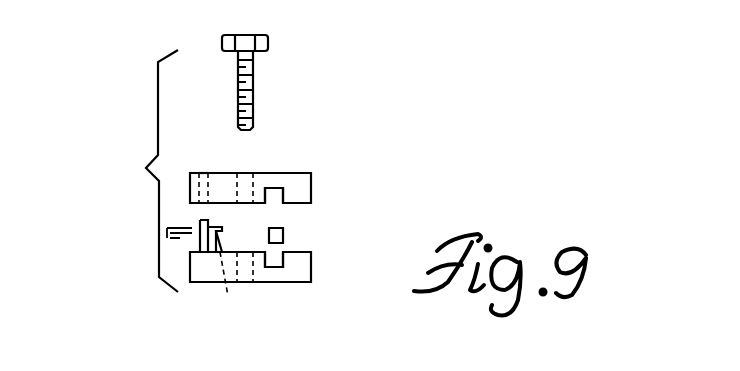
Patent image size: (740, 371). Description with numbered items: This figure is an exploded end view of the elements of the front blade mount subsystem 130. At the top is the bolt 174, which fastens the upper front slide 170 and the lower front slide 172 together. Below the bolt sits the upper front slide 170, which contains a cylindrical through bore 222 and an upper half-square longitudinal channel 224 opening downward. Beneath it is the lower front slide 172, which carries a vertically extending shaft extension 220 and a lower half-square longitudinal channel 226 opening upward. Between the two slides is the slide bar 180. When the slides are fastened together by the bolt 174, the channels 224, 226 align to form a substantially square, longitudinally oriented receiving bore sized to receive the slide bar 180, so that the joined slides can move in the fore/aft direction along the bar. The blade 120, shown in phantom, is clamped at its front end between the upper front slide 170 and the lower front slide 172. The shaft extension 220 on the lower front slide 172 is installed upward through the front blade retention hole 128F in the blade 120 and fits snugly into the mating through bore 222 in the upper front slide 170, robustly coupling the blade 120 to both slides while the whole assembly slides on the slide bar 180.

The front blade mount subsystem 130 is at (157, 156).
The bolt 174 is at (268, 45).
The upper front slide 170 is at (297, 173).
The lower front slide 172 is at (290, 282).
The cylindrical through bore 222 is at (205, 173).
The upper half-square longitudinal channel 224 is at (280, 207).
The lower half-square longitudinal channel 226 is at (278, 258).
The slide bar 180 is at (283, 234).
The blade 120 is at (226, 282).
The shaft extension 220 is at (197, 242).
The front blade retention hole 128F is at (180, 230).